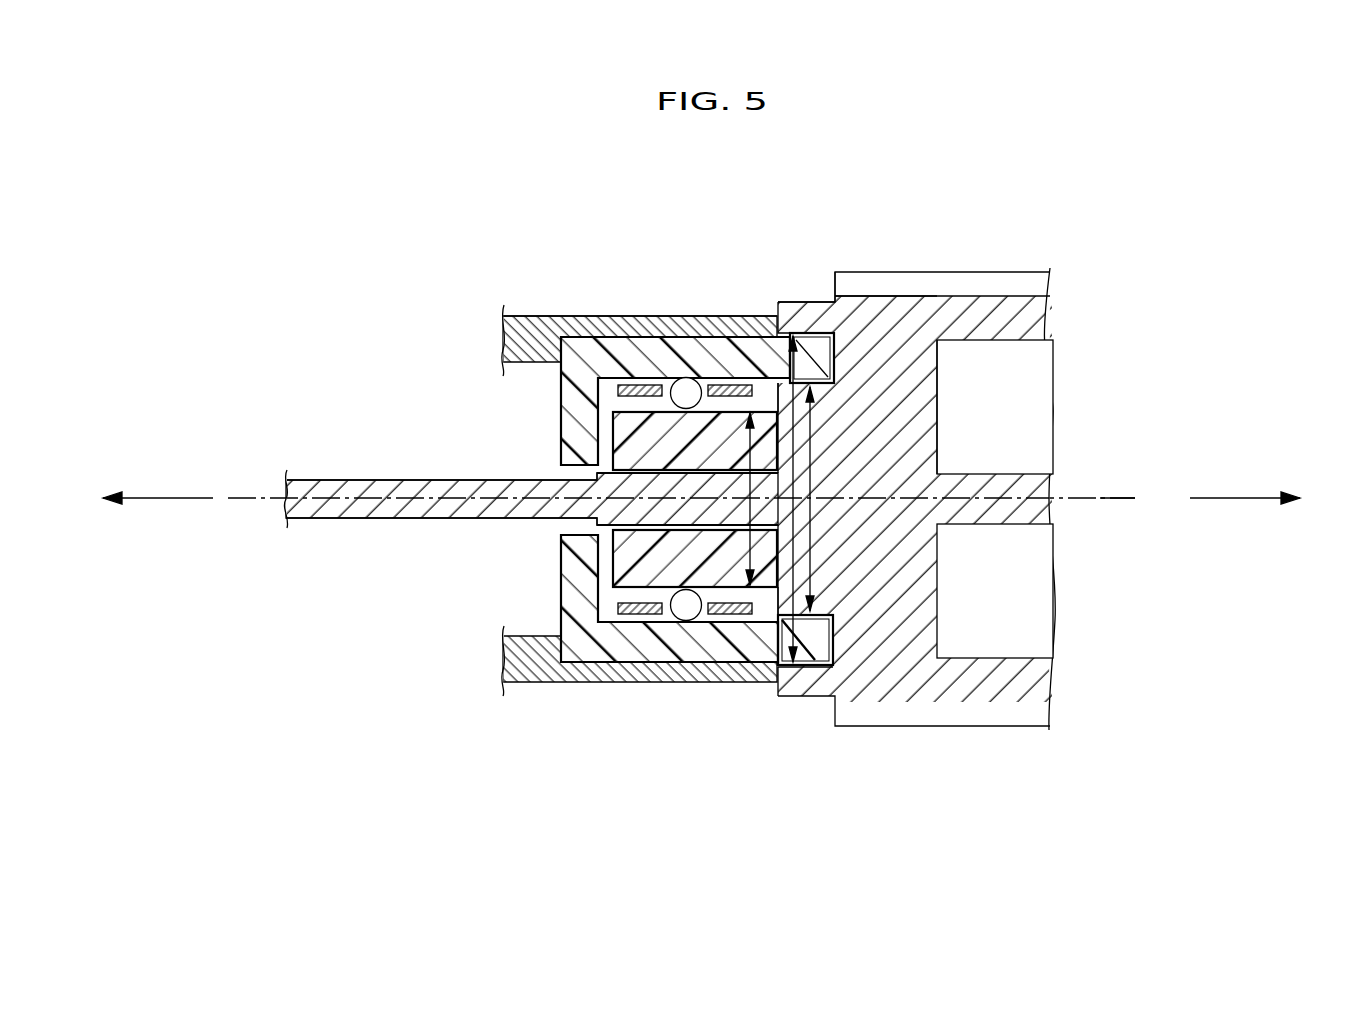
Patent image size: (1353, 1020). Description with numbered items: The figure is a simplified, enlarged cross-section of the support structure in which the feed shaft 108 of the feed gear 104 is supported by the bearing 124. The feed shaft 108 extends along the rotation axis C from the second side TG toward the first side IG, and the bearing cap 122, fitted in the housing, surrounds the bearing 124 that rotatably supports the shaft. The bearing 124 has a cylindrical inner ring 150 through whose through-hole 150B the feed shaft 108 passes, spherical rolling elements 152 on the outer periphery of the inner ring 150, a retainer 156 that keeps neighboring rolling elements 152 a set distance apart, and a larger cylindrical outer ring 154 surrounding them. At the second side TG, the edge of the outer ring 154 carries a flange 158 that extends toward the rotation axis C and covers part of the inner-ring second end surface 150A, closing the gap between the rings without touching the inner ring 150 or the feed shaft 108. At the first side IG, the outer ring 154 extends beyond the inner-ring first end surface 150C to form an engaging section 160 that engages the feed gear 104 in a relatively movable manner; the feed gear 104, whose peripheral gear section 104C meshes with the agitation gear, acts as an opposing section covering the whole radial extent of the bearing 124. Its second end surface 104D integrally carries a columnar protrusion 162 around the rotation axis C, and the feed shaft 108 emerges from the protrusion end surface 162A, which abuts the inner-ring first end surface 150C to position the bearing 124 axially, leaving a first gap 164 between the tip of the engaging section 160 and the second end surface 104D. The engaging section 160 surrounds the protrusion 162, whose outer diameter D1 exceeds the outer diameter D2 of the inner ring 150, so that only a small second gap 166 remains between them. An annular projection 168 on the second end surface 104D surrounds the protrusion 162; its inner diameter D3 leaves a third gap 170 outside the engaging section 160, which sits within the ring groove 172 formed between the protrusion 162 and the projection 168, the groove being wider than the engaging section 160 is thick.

The feed gear 104 is at (977, 697).
The peripheral gear section 104C is at (970, 283).
The second end surface 104D is at (832, 298).
The feed shaft 108 is at (327, 512).
The bearing cap 122 is at (602, 325).
The bearing 124 is at (568, 322).
The inner ring 150 is at (603, 625).
The inner-ring second end surface 150A is at (620, 545).
The through-hole 150B is at (630, 505).
The inner-ring first end surface 150C is at (781, 555).
The rolling elements 152 is at (686, 378).
The outer ring 154 is at (628, 357).
The retainer 156 is at (728, 377).
The flange 158 is at (560, 393).
The engaging section 160 is at (845, 325).
The protrusion 162 is at (820, 415).
The protrusion end surface 162A is at (773, 590).
The first gap 164 is at (835, 360).
The second gap 166 is at (835, 377).
The projection 168 is at (796, 303).
The third gap 170 is at (838, 318).
The ring groove 172 is at (822, 648).
The outer diameter of the protrusion D1 is at (817, 586).
The outer diameter of the inner ring D2 is at (748, 488).
The inner diameter of the projection D3 is at (820, 442).
The rotation axis C is at (1113, 498).
The second side TG is at (163, 498).
The first side IG is at (1253, 498).